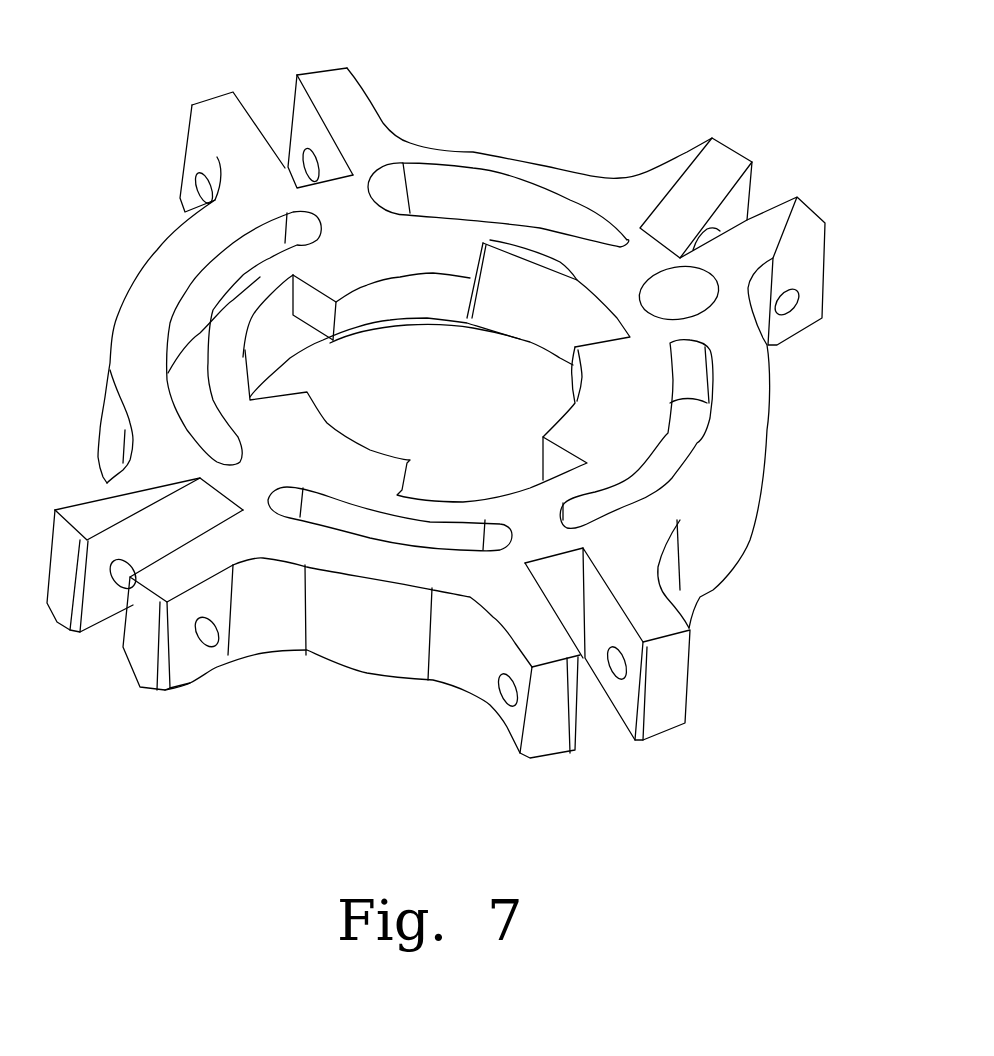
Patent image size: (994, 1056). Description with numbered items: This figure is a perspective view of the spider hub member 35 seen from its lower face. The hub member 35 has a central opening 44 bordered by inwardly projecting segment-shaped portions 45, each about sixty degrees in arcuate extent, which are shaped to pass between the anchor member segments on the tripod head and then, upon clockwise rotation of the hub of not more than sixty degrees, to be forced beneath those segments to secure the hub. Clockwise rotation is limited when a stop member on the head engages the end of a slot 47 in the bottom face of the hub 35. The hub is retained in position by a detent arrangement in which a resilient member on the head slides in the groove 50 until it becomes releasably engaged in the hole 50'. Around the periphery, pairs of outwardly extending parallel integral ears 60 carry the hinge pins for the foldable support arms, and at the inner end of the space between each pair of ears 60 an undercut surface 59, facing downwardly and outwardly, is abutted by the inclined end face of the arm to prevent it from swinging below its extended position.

The spider hub member 35 is at (203, 242).
The central opening 44 is at (510, 357).
The segment-shaped portions 45 is at (392, 300).
The slot 47 is at (223, 280).
The groove 50 is at (498, 156).
The hole 50' is at (772, 332).
The undercut surface 59 is at (560, 583).
The ears 60 is at (345, 67).